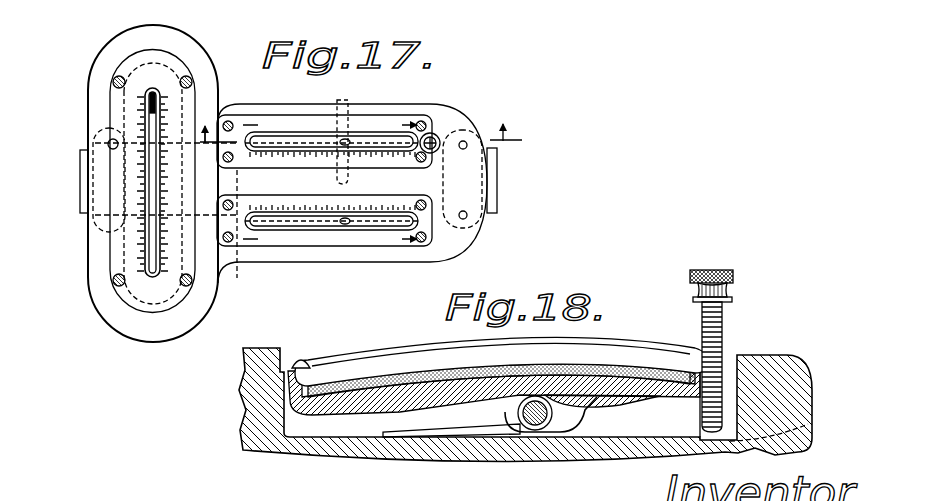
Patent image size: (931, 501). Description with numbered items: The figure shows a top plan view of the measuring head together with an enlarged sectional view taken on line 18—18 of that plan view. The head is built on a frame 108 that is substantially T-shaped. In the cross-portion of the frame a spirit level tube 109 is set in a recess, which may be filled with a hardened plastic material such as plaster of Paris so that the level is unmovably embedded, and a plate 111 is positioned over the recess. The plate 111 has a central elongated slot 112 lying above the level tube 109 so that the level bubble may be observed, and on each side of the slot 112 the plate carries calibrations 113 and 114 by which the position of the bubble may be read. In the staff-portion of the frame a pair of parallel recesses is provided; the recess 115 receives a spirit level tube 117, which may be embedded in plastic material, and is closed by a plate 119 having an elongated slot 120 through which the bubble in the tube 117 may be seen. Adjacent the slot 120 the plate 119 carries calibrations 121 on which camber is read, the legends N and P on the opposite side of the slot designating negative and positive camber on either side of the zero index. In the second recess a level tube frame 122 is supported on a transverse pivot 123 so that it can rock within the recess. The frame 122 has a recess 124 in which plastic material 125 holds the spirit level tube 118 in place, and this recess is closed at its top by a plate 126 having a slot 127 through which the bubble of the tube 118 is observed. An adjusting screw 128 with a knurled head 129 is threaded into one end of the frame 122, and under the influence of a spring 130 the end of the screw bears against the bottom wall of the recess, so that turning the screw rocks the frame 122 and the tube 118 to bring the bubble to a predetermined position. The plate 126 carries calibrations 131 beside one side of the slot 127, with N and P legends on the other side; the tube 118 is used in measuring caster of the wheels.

In FIG. 17, the section line 18— 18 is at (364, 152).
In FIG. 17, the frame 108 is at (226, 91).
In FIG. 17, the spirit level tube 109 is at (155, 97).
In FIG. 17, the plate 111 is at (138, 292).
In FIG. 17, the central elongated slot 112 is at (112, 118).
In FIG. 17, the calibrations 113 is at (136, 237).
In FIG. 17, the calibrations 114 is at (224, 103).
In FIG. 17, the recess 115 is at (244, 235).
In FIG. 17, the spirit level tube 117 is at (375, 222).
In FIG. 17, the spirit level tube 118 is at (370, 142).
In FIG. 18, the spirit level tube 118 is at (600, 357).
In FIG. 17, the plate 119 is at (441, 230).
In FIG. 17, the elongated slot 120 is at (307, 228).
In FIG. 17, the calibrations 121 is at (373, 221).
In FIG. 18, the level tube frame 122 is at (612, 405).
In FIG. 18, the transverse pivot 123 is at (535, 420).
In FIG. 18, the recess 124 is at (628, 396).
In FIG. 18, the plastic material 125 is at (467, 378).
In FIG. 18, the plate 126 is at (318, 348).
In FIG. 18, the slot 127 is at (637, 343).
In FIG. 18, the adjusting screw 128 is at (722, 333).
In FIG. 18, the knurled head 129 is at (718, 271).
In FIG. 18, the spring 130 is at (497, 432).
In FIG. 17, the calibrations 131 is at (310, 162).